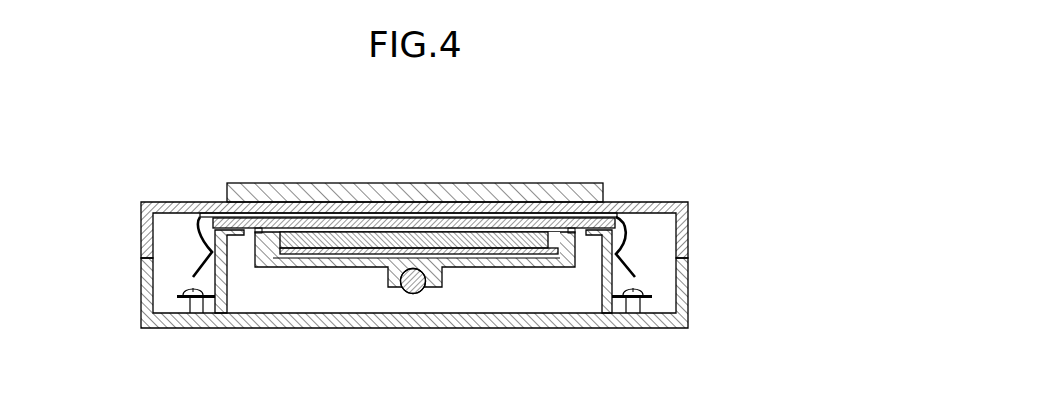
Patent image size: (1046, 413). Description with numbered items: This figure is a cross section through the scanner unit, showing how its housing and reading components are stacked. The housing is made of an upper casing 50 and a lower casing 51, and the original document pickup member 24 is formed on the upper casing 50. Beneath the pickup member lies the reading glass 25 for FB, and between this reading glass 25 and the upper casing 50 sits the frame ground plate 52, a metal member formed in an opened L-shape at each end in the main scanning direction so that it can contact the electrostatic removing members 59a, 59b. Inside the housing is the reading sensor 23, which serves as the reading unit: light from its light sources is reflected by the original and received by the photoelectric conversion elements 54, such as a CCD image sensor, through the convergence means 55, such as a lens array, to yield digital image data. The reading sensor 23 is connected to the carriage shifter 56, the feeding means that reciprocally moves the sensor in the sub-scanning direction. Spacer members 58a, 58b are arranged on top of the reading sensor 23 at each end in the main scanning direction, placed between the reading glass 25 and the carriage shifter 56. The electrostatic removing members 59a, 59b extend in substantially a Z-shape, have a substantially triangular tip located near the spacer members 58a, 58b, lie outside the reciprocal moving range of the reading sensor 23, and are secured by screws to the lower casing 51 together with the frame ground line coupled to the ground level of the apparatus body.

The reading sensor 23 is at (568, 240).
The original document pickup member 24 is at (415, 193).
The reading glass for FB 25 is at (487, 221).
The upper casing 50 is at (668, 202).
The lower casing 51 is at (672, 328).
The frame ground plate 52 is at (632, 238).
The photoelectric conversion elements 54 is at (332, 265).
The convergence means 55 is at (488, 258).
The carriage shifter 56 is at (413, 294).
The spacer member 58a is at (266, 222).
The spacer member 58b is at (598, 224).
The electrostatic removing member 59a is at (183, 294).
The electrostatic removing member 59b is at (647, 293).